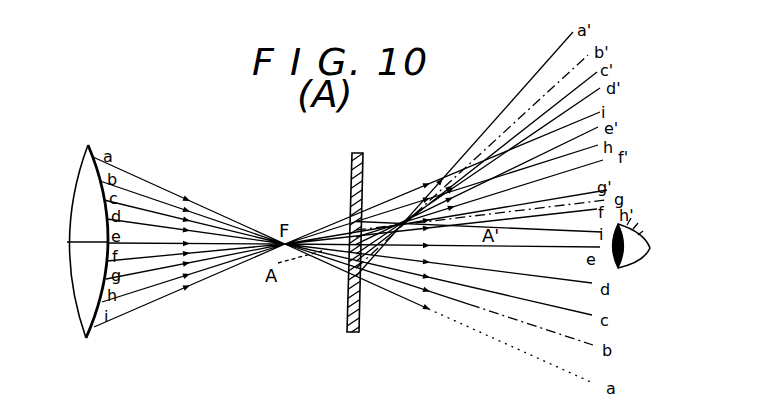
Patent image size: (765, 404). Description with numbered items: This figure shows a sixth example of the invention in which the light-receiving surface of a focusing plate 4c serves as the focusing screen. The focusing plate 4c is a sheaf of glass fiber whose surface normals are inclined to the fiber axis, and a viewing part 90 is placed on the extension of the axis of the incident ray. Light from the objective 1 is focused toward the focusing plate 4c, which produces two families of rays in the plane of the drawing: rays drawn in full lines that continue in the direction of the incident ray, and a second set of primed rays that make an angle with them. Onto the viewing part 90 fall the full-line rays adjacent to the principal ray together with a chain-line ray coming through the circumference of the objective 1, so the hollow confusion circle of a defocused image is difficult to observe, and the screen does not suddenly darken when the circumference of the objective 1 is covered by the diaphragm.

The objective 1 is at (82, 173).
The focusing plate 4c is at (352, 156).
The viewing part 90 is at (648, 228).